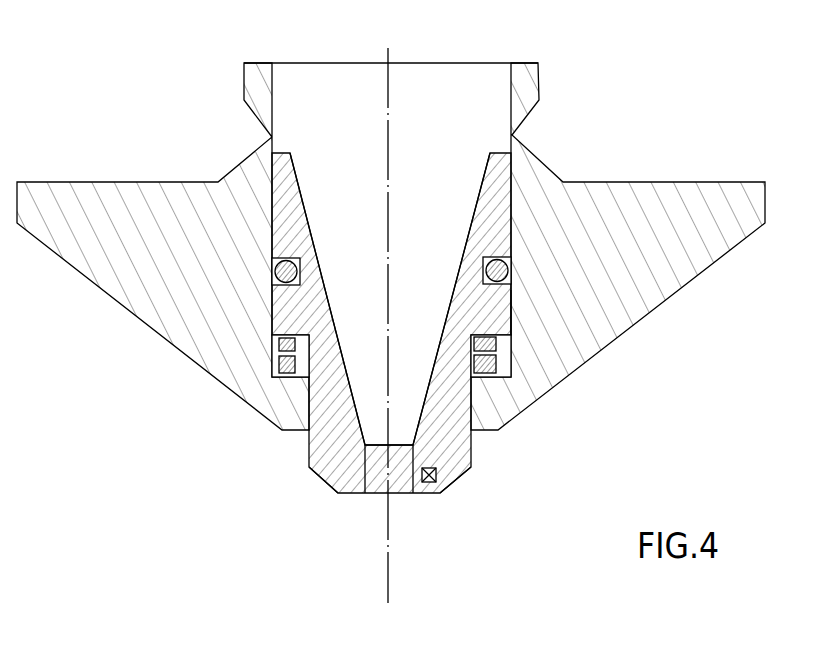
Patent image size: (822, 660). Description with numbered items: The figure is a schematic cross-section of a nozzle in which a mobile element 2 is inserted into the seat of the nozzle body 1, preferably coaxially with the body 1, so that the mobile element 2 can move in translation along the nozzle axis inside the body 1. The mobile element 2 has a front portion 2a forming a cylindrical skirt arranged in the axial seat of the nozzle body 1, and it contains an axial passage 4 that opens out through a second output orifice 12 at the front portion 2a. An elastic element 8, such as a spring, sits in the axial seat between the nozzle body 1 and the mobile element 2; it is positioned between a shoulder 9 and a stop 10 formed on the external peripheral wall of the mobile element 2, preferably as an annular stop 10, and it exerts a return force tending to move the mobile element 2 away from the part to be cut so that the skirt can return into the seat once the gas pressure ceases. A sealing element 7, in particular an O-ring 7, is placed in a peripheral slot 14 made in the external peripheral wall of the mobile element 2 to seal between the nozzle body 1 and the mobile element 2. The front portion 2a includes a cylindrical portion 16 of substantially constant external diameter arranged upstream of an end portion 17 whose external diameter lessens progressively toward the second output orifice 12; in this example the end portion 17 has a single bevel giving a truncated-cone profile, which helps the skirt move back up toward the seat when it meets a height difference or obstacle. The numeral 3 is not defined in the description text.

The nozzle body 1 is at (607, 307).
The mobile element 2 is at (342, 415).
The front portion 2a is at (327, 489).
The inlet bore 3 is at (329, 262).
The axial passage 4 is at (400, 244).
The sealing element 7 is at (268, 265).
The elastic element 8 is at (278, 362).
The shoulder 9 is at (490, 381).
The stop 10 is at (484, 315).
The second output orifice 12 is at (397, 493).
The peripheral slot 14 is at (312, 249).
The cylindrical portion 16 is at (475, 455).
The end portion 17 is at (455, 488).